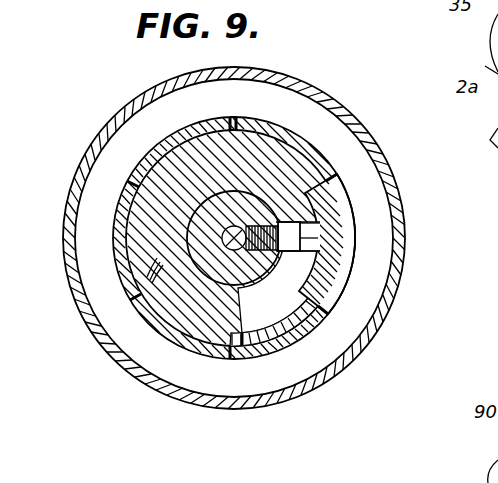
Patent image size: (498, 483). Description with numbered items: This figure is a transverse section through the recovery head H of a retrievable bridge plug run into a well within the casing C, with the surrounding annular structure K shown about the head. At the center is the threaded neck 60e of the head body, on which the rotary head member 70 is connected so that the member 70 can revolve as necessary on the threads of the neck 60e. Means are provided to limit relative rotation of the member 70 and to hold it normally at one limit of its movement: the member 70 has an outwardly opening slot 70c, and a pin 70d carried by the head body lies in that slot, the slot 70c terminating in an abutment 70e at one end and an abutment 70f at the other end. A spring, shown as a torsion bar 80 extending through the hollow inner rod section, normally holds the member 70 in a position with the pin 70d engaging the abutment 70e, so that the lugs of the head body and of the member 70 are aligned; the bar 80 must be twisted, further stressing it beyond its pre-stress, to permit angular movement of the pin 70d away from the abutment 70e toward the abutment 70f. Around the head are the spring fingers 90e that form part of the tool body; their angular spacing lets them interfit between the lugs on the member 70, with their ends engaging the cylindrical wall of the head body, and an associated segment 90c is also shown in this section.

The casing C is at (362, 350).
The ring K is at (273, 122).
The recovery head H is at (306, 172).
The rotary head member 70 is at (200, 318).
The slot 70c is at (312, 267).
The pin 70d is at (290, 239).
The abutment 70e is at (320, 223).
The abutment 70f is at (282, 317).
The threaded neck 60e is at (224, 240).
The torsion bar 80 is at (207, 290).
The ring segment 90c is at (254, 338).
The spring fingers 90e is at (188, 132).